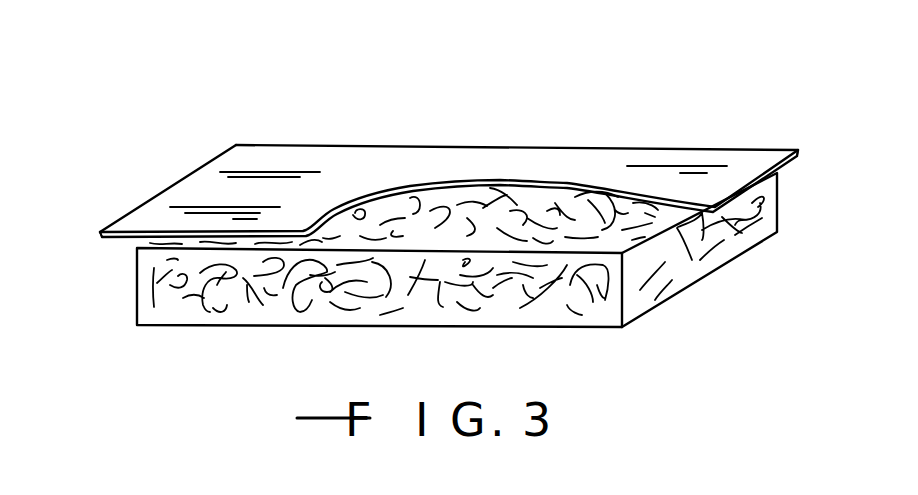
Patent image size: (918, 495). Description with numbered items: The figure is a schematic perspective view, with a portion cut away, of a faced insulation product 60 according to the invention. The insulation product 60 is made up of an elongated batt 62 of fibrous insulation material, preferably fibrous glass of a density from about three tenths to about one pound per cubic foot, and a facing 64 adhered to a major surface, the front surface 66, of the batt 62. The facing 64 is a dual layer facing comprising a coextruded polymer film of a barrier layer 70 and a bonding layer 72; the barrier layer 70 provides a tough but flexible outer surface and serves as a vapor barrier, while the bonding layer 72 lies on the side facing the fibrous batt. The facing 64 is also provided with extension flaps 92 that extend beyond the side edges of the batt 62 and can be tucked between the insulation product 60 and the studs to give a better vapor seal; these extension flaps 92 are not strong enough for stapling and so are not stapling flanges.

The insulation product 60 is at (170, 163).
The batt 62 is at (280, 332).
The facing 64 is at (319, 141).
The front surface 66 is at (640, 238).
The barrier layer 70 is at (500, 182).
The bonding layer 72 is at (540, 188).
The extension flaps 92 is at (788, 172).